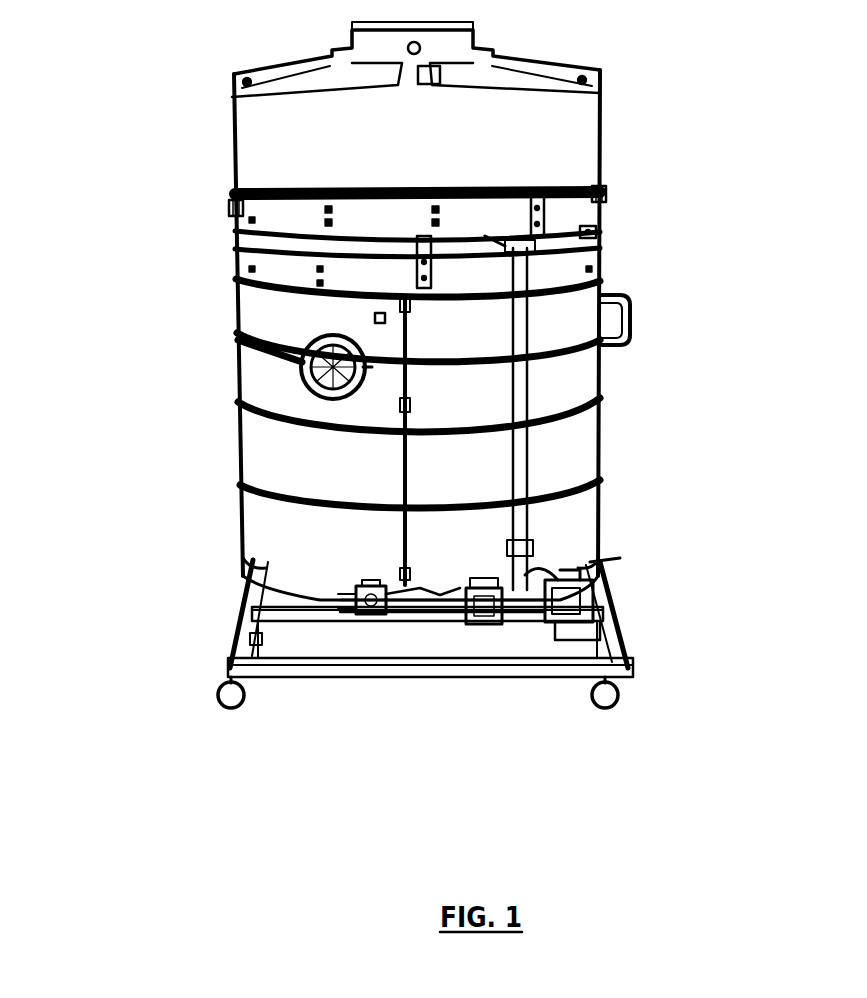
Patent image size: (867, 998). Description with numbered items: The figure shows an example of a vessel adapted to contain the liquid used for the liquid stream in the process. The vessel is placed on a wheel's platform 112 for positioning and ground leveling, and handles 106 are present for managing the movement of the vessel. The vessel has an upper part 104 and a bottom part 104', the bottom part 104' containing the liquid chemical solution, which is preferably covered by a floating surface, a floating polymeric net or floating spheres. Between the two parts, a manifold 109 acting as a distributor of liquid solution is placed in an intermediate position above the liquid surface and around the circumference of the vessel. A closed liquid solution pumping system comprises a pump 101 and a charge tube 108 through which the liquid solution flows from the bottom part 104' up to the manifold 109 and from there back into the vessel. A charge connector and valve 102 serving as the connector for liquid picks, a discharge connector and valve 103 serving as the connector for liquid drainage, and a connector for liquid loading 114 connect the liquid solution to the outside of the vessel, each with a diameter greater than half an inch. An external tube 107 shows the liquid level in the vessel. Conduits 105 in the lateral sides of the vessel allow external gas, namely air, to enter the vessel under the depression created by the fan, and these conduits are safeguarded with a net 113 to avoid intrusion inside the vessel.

The pump 101 is at (570, 610).
The connector for liquid picks 102 is at (482, 622).
The connector for liquid drainage 103 is at (372, 616).
The upper part 104 is at (349, 299).
The bottom part 104' is at (349, 499).
The conduits 105 is at (300, 366).
The handles 106 is at (230, 208).
The external tube 107 is at (403, 462).
The charge tube 108 is at (528, 453).
The manifold 109 is at (586, 233).
The wheel's platform 112 is at (612, 647).
The net 113 is at (328, 375).
The connector for liquid loading 114 is at (374, 318).